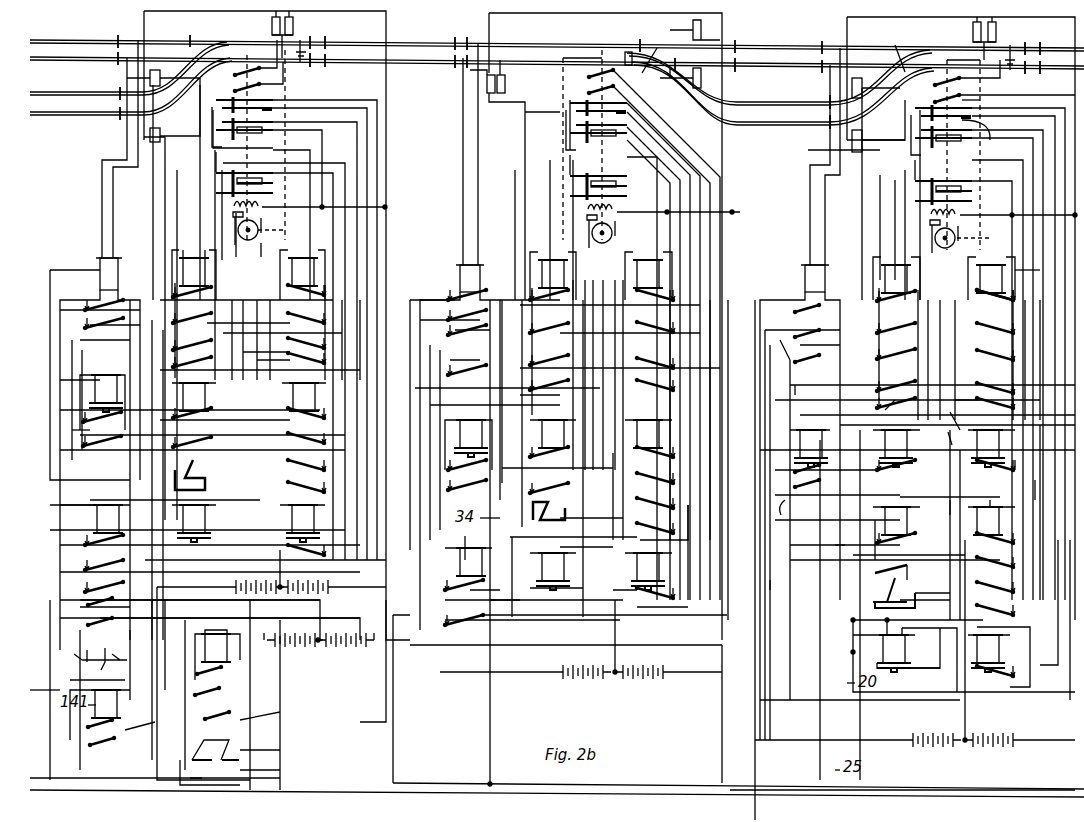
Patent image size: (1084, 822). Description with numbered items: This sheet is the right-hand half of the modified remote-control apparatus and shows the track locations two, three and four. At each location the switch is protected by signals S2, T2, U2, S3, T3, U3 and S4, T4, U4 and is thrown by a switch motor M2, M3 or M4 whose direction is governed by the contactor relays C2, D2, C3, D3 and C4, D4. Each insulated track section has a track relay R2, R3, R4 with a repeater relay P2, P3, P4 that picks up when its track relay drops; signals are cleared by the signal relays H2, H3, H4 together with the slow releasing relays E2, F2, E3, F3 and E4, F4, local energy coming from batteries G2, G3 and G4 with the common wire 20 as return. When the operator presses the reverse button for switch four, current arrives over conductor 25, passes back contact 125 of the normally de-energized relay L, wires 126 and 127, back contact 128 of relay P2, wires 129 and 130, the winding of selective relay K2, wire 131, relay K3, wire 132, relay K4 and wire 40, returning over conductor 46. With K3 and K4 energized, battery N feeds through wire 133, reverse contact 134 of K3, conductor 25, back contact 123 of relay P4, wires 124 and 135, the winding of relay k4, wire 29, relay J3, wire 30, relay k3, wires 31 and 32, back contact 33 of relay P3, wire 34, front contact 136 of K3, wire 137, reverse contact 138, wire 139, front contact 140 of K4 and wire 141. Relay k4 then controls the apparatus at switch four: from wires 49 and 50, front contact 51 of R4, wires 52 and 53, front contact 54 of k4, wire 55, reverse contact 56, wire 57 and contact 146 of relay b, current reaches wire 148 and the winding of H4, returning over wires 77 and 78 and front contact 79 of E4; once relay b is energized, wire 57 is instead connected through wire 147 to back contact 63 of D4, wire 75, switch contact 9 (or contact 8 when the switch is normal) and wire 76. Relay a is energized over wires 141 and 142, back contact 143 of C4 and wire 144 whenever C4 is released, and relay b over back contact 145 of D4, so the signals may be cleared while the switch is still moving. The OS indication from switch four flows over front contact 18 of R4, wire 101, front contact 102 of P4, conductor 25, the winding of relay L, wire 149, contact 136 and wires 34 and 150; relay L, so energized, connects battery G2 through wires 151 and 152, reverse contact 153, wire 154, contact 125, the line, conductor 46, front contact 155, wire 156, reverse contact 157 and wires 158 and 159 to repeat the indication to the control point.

The signal T2 is at (160, 68).
The signal S2 is at (295, 25).
The signal U2 is at (150, 136).
The switch motor M2 is at (236, 228).
The contactor relay C2 is at (195, 275).
The contactor relay D2 is at (303, 258).
The track relay R2 is at (100, 265).
The repeater relay P2 is at (95, 388).
The selective relay K2 is at (205, 393).
The signal relay H2 is at (315, 397).
The selective relay K3 is at (97, 518).
The slow releasing relay E2 is at (205, 518).
The slow releasing relay F2 is at (314, 518).
The battery G2 is at (345, 583).
The relay L is at (227, 648).
The battery N is at (319, 651).
The selective relay K4 is at (117, 703).
The wire 130 is at (120, 330).
The wire 129 is at (72, 432).
The back contact 128 is at (98, 440).
The wire 131 is at (130, 470).
The wire 132 is at (50, 512).
The wire 137 is at (80, 607).
The contact 136 is at (102, 601).
The wire 149 is at (103, 628).
The reverse contact 134 is at (95, 641).
The wire 133 is at (195, 623).
The contact 125 is at (238, 670).
The wire 126 is at (213, 688).
The front contact 155 is at (260, 701).
The wire 156 is at (227, 730).
The reverse contact 153 is at (215, 748).
The wire 154 is at (182, 735).
The reverse contact 157 is at (288, 748).
The wire 158 is at (288, 768).
The wire 152 is at (180, 778).
The reverse contact 138 is at (92, 673).
The wire 141 is at (812, 394).
The front contact 140 is at (87, 725).
The wire 139 is at (120, 745).
The wire 40 is at (45, 690).
The conductor 46 is at (110, 772).
The conductor 25 is at (280, 778).
The wire 34 is at (393, 745).
The wire 159 is at (386, 688).
The wire 127 is at (138, 580).
The wire 151 is at (203, 584).
The signal T3 is at (672, 45).
The signal S3 is at (505, 82).
The signal U3 is at (690, 78).
The switch motor M3 is at (614, 228).
The contactor relay C3 is at (557, 275).
The contactor relay D3 is at (652, 248).
The track relay R3 is at (460, 272).
The repeater relay P3 is at (462, 432).
The selective relay k3 is at (564, 434).
The signal relay H3 is at (659, 434).
The selective relay J3 is at (460, 565).
The slow releasing relay E3 is at (540, 565).
The slow releasing relay F3 is at (662, 567).
The battery G3 is at (638, 653).
The wire 31 is at (525, 392).
The wire 32 is at (454, 499).
The back contact 33 is at (466, 483).
The wire 30 is at (465, 536).
The signal T4 is at (862, 78).
The signal S4 is at (996, 30).
The signal U4 is at (852, 145).
The switch motor M4 is at (960, 232).
The contactor relay C4 is at (900, 280).
The contactor relay D4 is at (992, 265).
The track relay R4 is at (825, 280).
The repeater relay P4 is at (812, 430).
The relay a is at (907, 436).
The relay b is at (972, 440).
The selective relay k4 is at (885, 520).
The signal relay H4 is at (999, 520).
The slow releasing relay E4 is at (905, 648).
The slow releasing relay F4 is at (999, 650).
The battery G4 is at (915, 753).
The switch contact 8 is at (971, 99).
The switch contact 9 is at (980, 138).
The wire 75 is at (1030, 265).
The contact 63 is at (993, 302).
The front contact 51 is at (796, 311).
The wire 101 is at (779, 342).
The wire 52 is at (840, 340).
The contact 18 is at (811, 357).
The wire 142 is at (881, 399).
The back contact 143 is at (901, 411).
The wire 147 is at (955, 400).
The wire 144 is at (941, 418).
The back contact 145 is at (1003, 399).
The common wire 20 is at (942, 447).
The contact 146 is at (1016, 482).
The front contact 102 is at (797, 472).
The back contact 123 is at (810, 487).
The wire 124 is at (796, 512).
The wire 135 is at (900, 503).
The wire 77 is at (937, 498).
The wire 148 is at (975, 495).
The wire 76 is at (1034, 490).
The wire 53 is at (833, 545).
The wire 29 is at (770, 595).
The front contact 54 is at (884, 578).
The wire 55 is at (908, 566).
The reverse contact 56 is at (887, 593).
The wire 78 is at (948, 590).
The wire 57 is at (922, 602).
The front contact 79 is at (898, 668).
The wire 50 is at (812, 703).
The wire 49 is at (965, 720).
The wire 150 is at (790, 783).